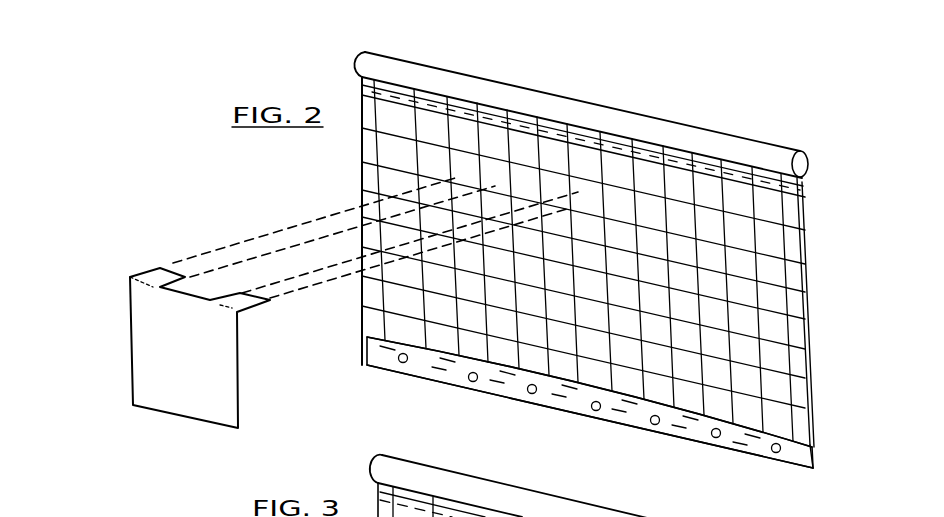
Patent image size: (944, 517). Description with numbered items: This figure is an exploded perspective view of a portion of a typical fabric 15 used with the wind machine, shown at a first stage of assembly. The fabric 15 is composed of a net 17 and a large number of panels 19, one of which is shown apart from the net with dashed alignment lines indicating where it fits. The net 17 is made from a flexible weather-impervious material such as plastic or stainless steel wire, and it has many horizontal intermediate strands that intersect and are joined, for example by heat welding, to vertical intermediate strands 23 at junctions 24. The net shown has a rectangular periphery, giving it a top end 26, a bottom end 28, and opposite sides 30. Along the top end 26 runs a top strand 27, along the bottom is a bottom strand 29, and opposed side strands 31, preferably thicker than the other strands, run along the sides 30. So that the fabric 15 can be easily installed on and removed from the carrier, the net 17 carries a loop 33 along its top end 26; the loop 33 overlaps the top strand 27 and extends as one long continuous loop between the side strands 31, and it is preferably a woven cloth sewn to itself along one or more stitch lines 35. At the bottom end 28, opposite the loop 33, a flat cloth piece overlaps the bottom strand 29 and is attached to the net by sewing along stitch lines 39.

The fabric 15 is at (829, 425).
The net 17 is at (817, 228).
The panel 19 is at (116, 355).
The vertical intermediate strand 23 is at (660, 220).
The junction 24 is at (760, 350).
The top end 26 is at (612, 487).
The top strand 27 is at (488, 107).
The bottom end 28 is at (750, 457).
The bottom strand 29 is at (442, 357).
The side 30 is at (362, 166).
The side strand 31 is at (812, 380).
The loop 33 is at (763, 153).
The stitch line 35 is at (553, 127).
The stitch line 39 is at (497, 372).